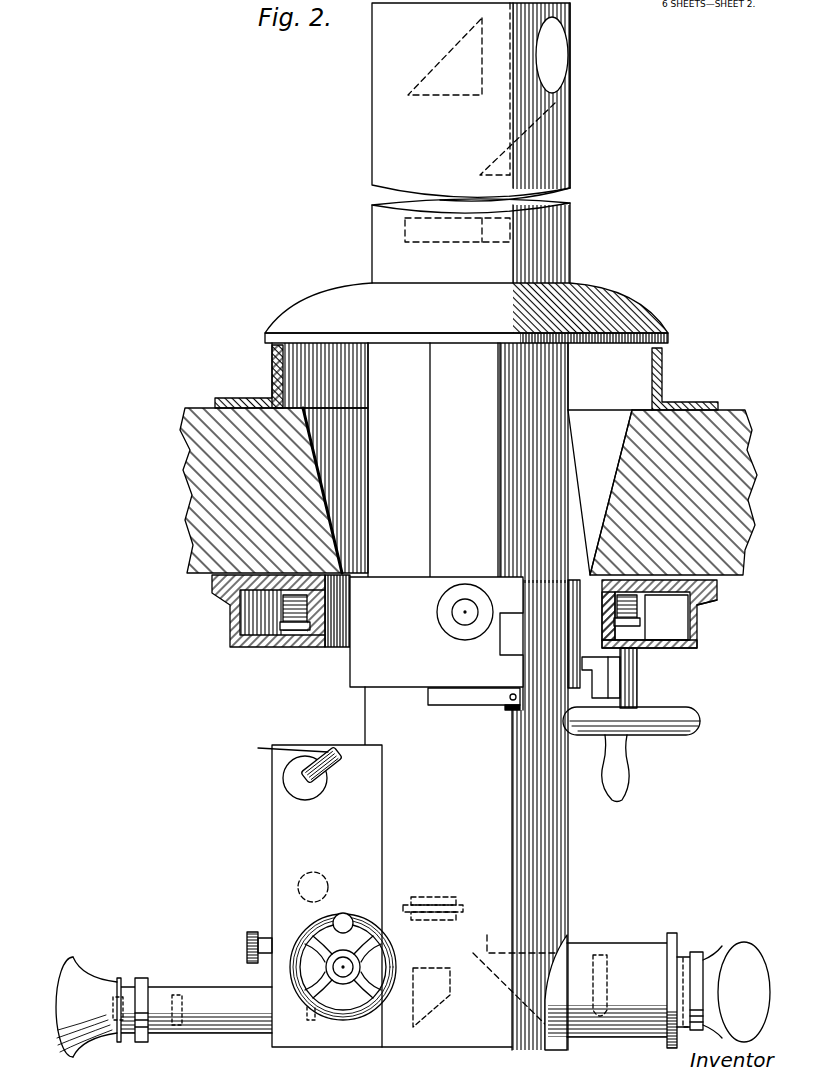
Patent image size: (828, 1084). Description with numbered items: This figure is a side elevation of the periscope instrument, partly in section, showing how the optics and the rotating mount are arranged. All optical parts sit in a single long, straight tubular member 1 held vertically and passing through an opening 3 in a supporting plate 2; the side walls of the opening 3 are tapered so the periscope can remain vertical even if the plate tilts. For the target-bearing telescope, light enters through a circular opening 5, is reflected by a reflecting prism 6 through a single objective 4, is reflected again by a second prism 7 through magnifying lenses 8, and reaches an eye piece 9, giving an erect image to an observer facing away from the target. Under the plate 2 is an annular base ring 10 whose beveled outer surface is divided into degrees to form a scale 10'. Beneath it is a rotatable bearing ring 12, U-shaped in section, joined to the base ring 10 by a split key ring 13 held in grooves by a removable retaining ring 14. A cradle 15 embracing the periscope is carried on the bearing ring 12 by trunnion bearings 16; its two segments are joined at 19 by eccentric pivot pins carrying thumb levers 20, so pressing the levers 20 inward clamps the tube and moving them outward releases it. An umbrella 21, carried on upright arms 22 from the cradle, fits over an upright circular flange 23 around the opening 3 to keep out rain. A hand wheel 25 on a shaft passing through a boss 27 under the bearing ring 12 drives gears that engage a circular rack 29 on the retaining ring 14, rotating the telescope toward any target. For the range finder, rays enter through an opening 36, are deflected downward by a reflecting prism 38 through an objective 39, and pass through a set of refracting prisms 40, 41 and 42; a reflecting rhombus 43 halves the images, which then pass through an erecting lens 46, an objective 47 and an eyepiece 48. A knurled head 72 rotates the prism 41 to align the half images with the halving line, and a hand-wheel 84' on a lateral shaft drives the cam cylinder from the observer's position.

The tubular member 1 is at (385, 165).
The supporting plate 2 is at (733, 427).
The opening 3 is at (600, 492).
The objective 4 is at (545, 237).
The circular opening 5 is at (570, 140).
The reflecting prism 6 is at (508, 148).
The second prism 7 is at (519, 970).
The magnifying lenses 8 is at (605, 960).
The eye piece 9 is at (686, 958).
The annular base ring 10 is at (684, 612).
The scale 10' is at (738, 615).
The bearing ring 12 is at (698, 640).
The split key ring 13 is at (606, 614).
The retaining ring 14 is at (651, 626).
The cradle 15 is at (383, 638).
The trunnion bearings 16 is at (466, 606).
The joint 19 is at (510, 710).
The thumb levers 20 is at (467, 700).
The umbrella 21 is at (615, 312).
The upright arms 22 is at (445, 497).
The upright circular flange 23 is at (662, 382).
The hand wheel 25 is at (700, 716).
The boss 27 is at (638, 684).
The circular rack 29 is at (290, 612).
The opening 36 is at (560, 66).
The reflecting prism 38 is at (437, 63).
The objective 39 is at (432, 243).
The refracting prism 40 is at (430, 897).
The rotatable prism 41 is at (460, 905).
The refracting prism 42 is at (446, 920).
The reflecting rhombus 43 is at (426, 982).
The erecting lens 46 is at (311, 1020).
The objective 47 is at (182, 1036).
The eyepiece 48 is at (121, 1042).
The knurled head 72 is at (247, 947).
The hand-wheel 84' is at (311, 831).